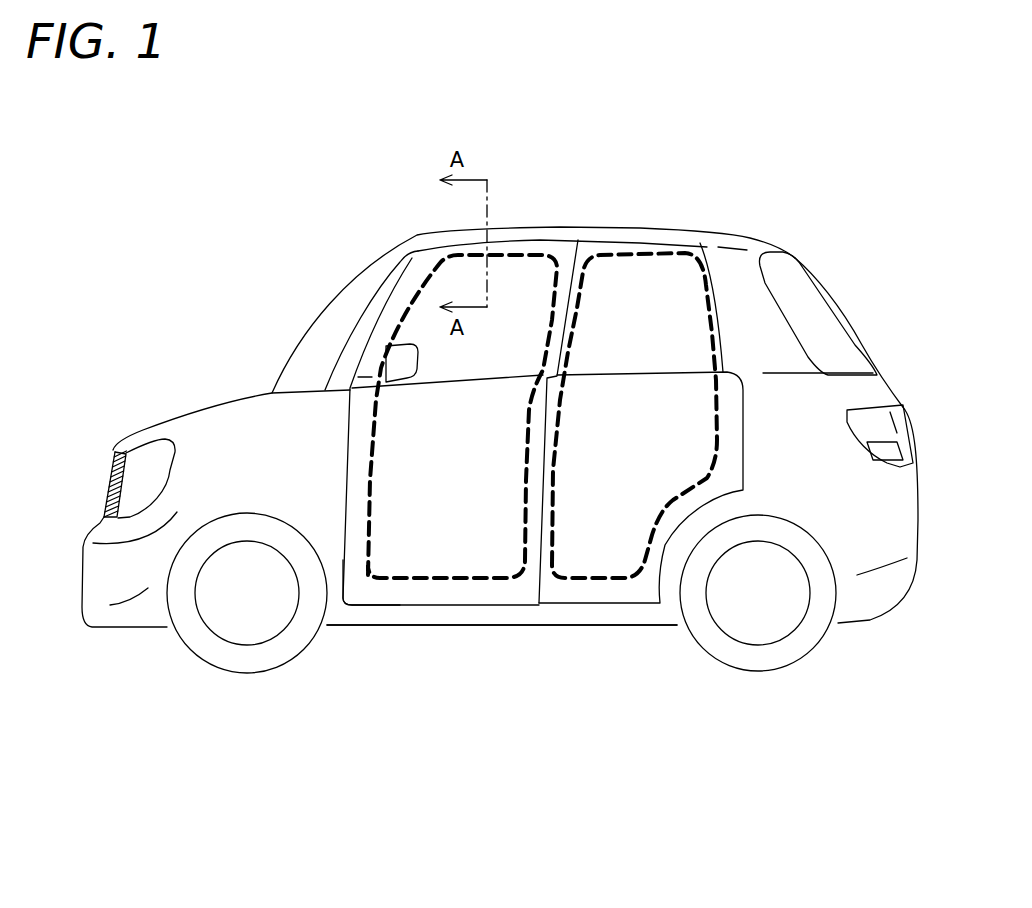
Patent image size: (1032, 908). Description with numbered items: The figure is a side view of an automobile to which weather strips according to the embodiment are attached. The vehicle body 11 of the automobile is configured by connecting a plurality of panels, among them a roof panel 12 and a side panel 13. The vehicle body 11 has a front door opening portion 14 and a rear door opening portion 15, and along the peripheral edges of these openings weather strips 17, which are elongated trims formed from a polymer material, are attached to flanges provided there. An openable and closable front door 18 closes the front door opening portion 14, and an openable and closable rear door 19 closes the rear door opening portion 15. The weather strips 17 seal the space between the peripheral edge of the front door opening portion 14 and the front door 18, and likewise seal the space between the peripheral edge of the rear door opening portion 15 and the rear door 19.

The vehicle body 11 is at (727, 235).
The roof panel 12 is at (578, 240).
The side panel 13 is at (747, 302).
The front door opening portion 14 is at (468, 522).
The rear door opening portion 15 is at (603, 517).
The weather strip 17 is at (458, 250).
The front door 18 is at (363, 588).
The rear door 19 is at (570, 593).